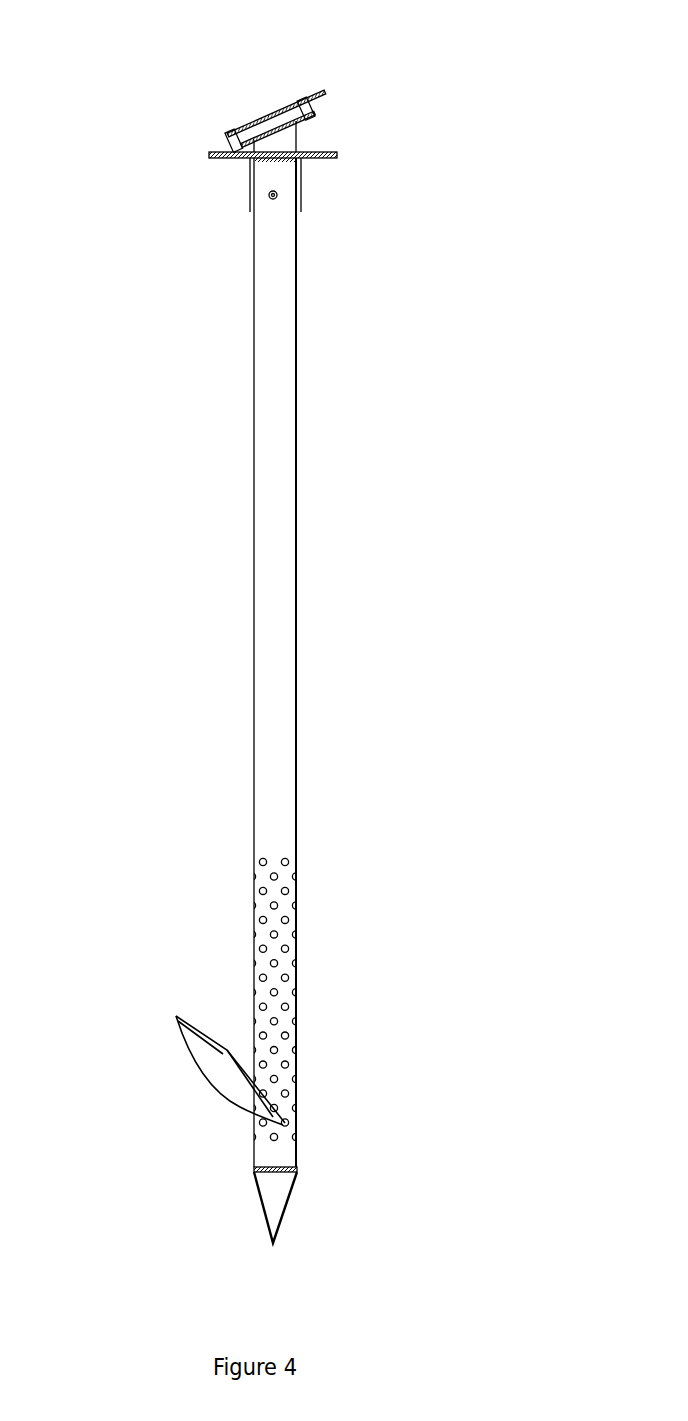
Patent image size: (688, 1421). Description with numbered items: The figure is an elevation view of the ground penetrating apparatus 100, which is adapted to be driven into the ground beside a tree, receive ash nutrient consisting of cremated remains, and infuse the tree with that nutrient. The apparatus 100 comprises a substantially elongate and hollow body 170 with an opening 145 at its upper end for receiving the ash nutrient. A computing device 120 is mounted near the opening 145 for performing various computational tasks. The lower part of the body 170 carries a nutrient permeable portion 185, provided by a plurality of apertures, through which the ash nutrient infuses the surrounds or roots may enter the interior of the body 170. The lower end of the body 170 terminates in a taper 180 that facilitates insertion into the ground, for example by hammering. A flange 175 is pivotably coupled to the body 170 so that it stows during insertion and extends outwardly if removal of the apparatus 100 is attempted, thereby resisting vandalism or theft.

The ground penetrating apparatus 100 is at (514, 148).
The computing device 120 is at (235, 98).
The opening 145 is at (335, 170).
The body 170 is at (296, 323).
The flange 175 is at (176, 1016).
The taper 180 is at (254, 1172).
The nutrient permeable portion 185 is at (335, 867).